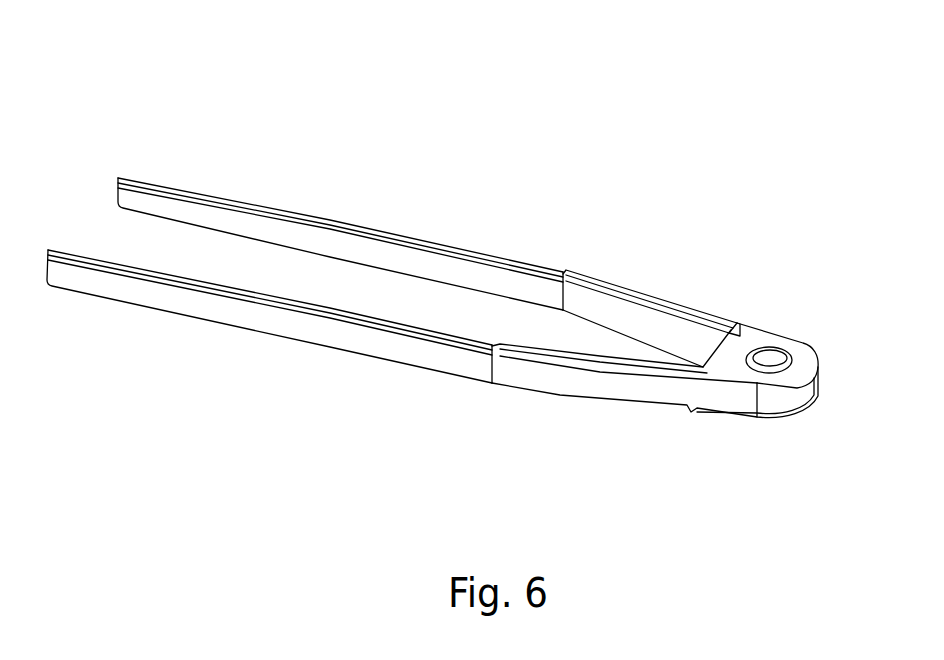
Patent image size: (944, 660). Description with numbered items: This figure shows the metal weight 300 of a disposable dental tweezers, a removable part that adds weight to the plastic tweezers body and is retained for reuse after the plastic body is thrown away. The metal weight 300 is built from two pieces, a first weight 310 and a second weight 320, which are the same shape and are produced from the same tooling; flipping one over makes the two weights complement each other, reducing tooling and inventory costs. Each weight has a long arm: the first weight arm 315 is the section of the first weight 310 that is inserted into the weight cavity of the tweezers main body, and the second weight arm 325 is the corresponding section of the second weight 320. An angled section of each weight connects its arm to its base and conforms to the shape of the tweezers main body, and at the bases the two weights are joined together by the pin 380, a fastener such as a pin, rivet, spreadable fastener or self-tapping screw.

The metal weight 300 is at (438, 277).
The second weight arm 325 is at (278, 217).
The second weight 320 is at (625, 312).
The first weight arm 315 is at (203, 313).
The first weight 310 is at (660, 371).
The pin 380 is at (772, 357).